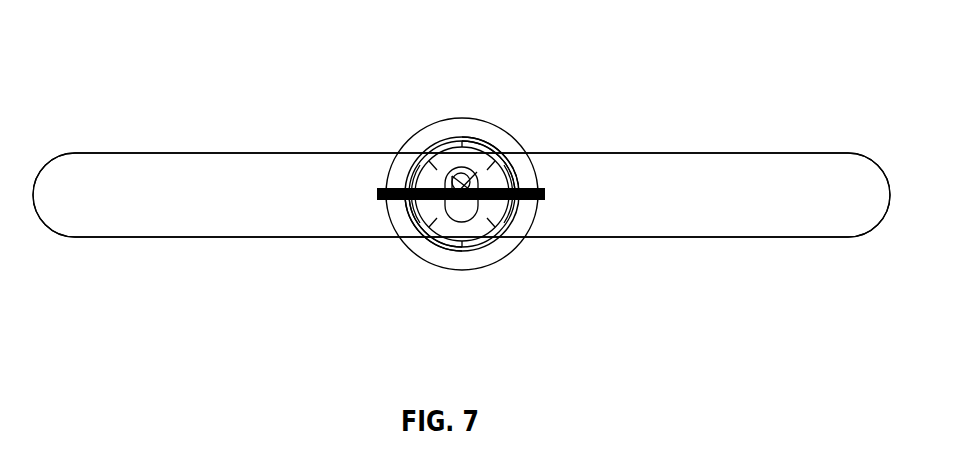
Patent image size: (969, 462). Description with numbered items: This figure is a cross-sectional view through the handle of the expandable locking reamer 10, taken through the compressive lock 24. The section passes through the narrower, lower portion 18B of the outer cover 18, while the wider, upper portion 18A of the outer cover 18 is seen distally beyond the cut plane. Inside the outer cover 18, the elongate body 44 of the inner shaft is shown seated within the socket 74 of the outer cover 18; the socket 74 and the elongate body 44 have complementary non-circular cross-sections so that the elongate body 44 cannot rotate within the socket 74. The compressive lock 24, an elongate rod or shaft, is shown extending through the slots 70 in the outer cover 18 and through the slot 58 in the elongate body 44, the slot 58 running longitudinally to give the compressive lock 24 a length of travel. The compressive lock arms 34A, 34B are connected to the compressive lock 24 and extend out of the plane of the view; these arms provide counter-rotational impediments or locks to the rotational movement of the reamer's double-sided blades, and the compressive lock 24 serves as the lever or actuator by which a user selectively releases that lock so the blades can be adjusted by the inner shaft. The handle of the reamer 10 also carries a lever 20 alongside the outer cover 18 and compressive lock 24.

The expandable locking reamer 10 is at (754, 53).
The lever 20 is at (114, 165).
The compressive lock 24 is at (377, 194).
The outer cover 18 is at (452, 168).
The upper portion 18A is at (450, 268).
The lower portion 18B is at (507, 156).
The compressive lock arm 34A is at (470, 222).
The compressive lock arm 34B is at (453, 212).
The elongate body 44 is at (462, 199).
The slot 58 is at (463, 189).
The slot 70 is at (401, 170).
The socket 74 is at (478, 168).